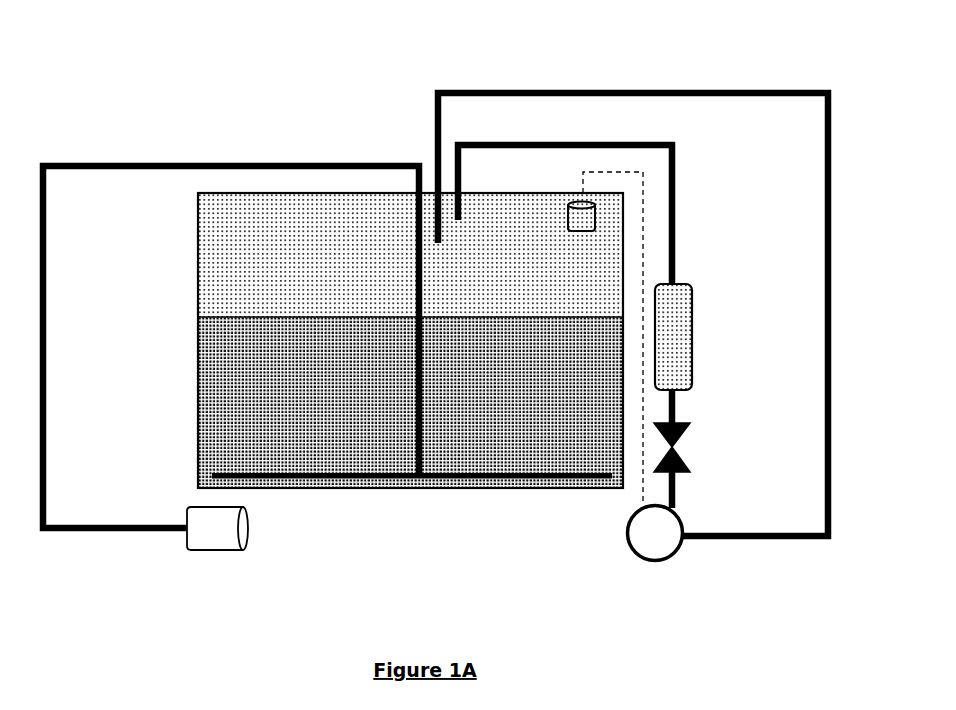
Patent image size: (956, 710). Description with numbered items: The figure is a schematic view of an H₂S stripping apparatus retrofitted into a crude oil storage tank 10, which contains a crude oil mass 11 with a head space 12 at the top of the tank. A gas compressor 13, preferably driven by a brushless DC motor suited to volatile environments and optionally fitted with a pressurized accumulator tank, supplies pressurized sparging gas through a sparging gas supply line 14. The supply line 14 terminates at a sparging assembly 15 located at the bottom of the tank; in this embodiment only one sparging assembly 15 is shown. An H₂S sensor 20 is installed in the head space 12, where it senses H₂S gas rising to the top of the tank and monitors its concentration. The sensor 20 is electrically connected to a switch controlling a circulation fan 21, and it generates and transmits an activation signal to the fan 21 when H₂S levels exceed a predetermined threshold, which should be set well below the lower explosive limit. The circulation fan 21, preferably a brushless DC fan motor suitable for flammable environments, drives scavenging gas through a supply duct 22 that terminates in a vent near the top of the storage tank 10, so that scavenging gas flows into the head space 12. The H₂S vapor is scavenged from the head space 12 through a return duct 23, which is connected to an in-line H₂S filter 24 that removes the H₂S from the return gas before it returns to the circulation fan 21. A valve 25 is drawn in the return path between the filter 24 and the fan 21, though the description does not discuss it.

The crude oil storage tank 10 is at (362, 496).
The crude oil mass 11 is at (256, 401).
The head space 12 is at (247, 272).
The gas compressor 13 is at (217, 528).
The sparging gas supply line 14 is at (200, 155).
The sparging assembly 15 is at (502, 487).
The H₂S sensor 20 is at (577, 220).
The circulation fan 21 is at (633, 553).
The supply duct 22 is at (585, 82).
The return duct 23 is at (684, 230).
The in-line H₂S filter 24 is at (695, 337).
The valve 25 is at (678, 443).